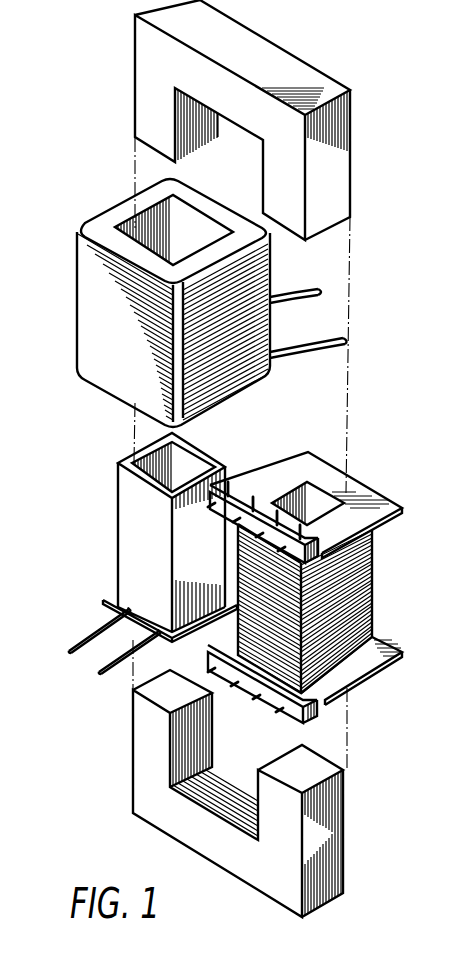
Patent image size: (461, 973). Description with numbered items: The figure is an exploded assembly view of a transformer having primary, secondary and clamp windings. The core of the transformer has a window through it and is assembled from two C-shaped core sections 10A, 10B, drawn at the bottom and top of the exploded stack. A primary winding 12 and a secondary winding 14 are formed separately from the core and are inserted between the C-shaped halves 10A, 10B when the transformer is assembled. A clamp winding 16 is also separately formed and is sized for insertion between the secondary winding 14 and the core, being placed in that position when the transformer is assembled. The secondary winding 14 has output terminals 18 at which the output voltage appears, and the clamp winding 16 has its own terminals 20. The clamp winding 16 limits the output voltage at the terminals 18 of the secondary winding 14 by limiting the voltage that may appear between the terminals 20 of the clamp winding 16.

The C-shaped core section 10A is at (345, 826).
The C-shaped core section 10B is at (350, 125).
The primary winding 12 is at (373, 605).
The secondary winding 14 is at (88, 317).
The clamp winding 16 is at (132, 557).
The terminals 18 is at (321, 300).
The terminals 20 is at (108, 670).